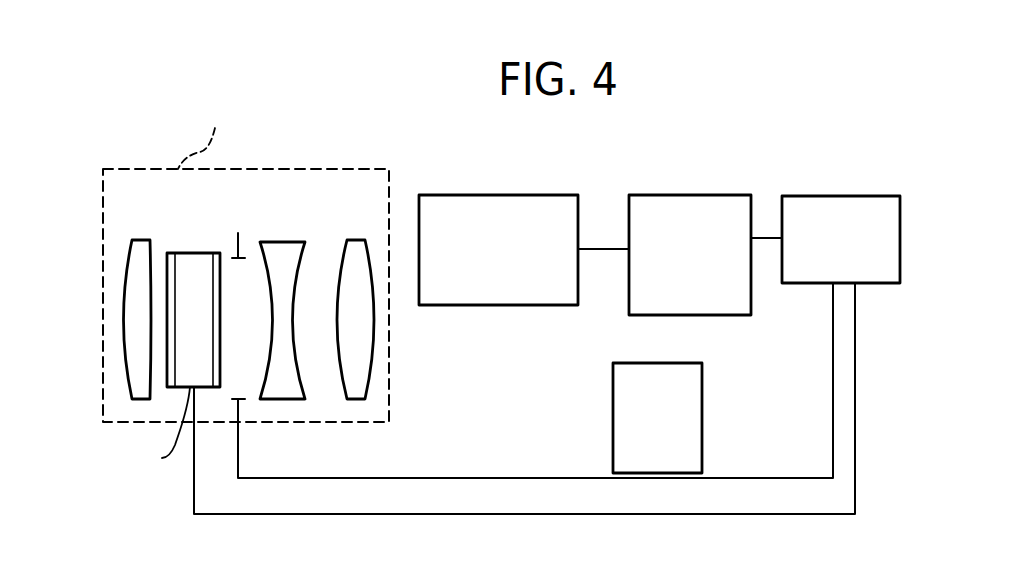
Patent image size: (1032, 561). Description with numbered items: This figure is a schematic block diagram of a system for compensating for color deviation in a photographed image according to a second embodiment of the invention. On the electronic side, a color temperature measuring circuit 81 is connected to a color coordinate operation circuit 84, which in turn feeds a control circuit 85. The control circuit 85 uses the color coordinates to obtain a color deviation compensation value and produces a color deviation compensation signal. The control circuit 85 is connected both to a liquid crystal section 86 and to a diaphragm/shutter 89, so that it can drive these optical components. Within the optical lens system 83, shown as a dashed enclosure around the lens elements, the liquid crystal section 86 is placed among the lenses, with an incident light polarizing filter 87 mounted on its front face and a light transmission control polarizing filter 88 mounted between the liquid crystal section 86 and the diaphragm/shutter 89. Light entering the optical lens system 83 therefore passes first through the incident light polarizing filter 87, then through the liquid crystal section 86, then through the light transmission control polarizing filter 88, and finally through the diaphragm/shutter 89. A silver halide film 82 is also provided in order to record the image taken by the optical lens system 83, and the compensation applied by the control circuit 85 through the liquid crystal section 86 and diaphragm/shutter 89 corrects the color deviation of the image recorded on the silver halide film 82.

The color temperature measuring circuit 81 is at (498, 195).
The silver halide film 82 is at (702, 429).
The optical lens system 83 is at (390, 312).
The color coordinate operation circuit 84 is at (677, 195).
The control circuit 85 is at (828, 196).
The liquid crystal section 86 is at (476, 349).
The incident light polarizing filter 87 is at (170, 252).
The light transmission control polarizing filter 88 is at (218, 252).
The diaphragm/shutter 89 is at (238, 233).